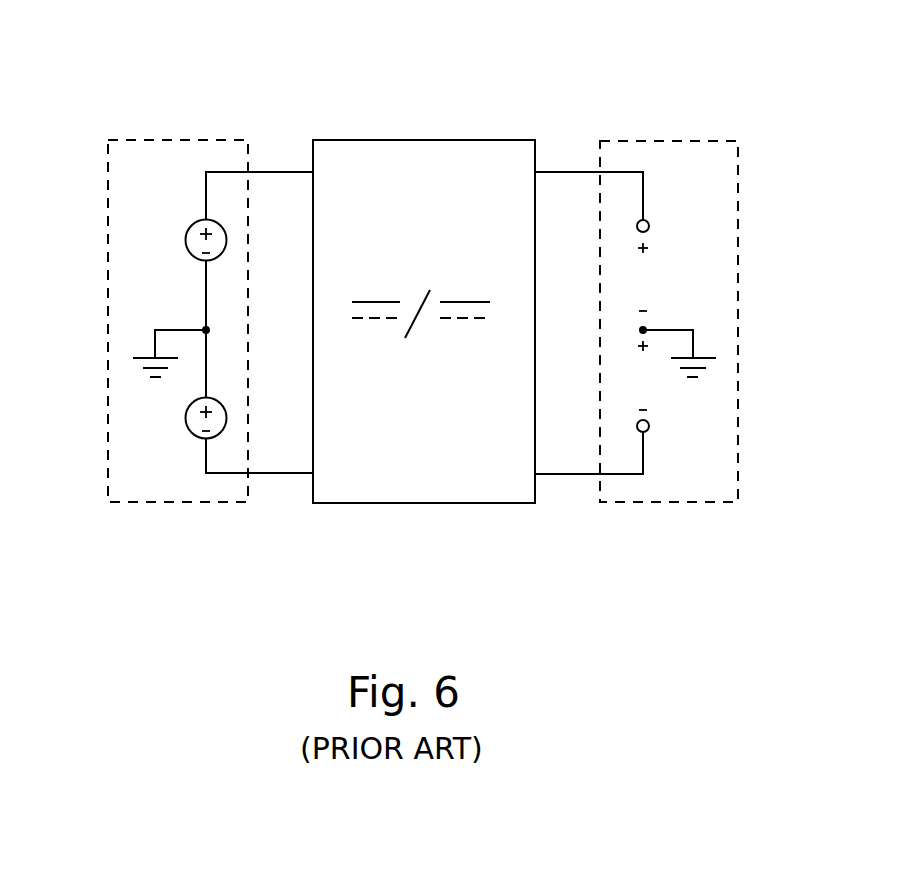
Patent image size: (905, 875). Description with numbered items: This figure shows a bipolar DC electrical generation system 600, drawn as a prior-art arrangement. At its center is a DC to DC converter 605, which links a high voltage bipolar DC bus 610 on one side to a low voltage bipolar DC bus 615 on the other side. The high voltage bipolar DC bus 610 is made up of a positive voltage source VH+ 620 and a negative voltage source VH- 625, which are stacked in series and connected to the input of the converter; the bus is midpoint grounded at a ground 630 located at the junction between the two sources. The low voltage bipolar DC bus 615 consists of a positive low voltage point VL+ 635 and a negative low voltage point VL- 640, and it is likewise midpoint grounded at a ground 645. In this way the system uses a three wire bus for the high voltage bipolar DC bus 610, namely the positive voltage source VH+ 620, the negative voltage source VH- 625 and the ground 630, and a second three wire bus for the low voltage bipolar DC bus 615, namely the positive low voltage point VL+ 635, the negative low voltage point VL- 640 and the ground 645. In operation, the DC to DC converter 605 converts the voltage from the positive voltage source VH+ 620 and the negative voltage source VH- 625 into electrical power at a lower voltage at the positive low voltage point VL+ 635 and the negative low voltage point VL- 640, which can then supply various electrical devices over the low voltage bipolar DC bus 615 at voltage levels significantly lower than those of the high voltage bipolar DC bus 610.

The bipolar DC electrical generation system 600 is at (91, 37).
The DC to DC converter 605 is at (418, 140).
The high voltage bipolar DC bus 610 is at (149, 140).
The low voltage bipolar DC bus 615 is at (697, 141).
The positive voltage source VH+ 620 is at (190, 226).
The negative voltage source VH- 625 is at (194, 437).
The ground 630 is at (153, 338).
The positive low voltage point VL+ 635 is at (650, 224).
The negative low voltage point VL- 640 is at (650, 425).
The ground 645 is at (693, 340).